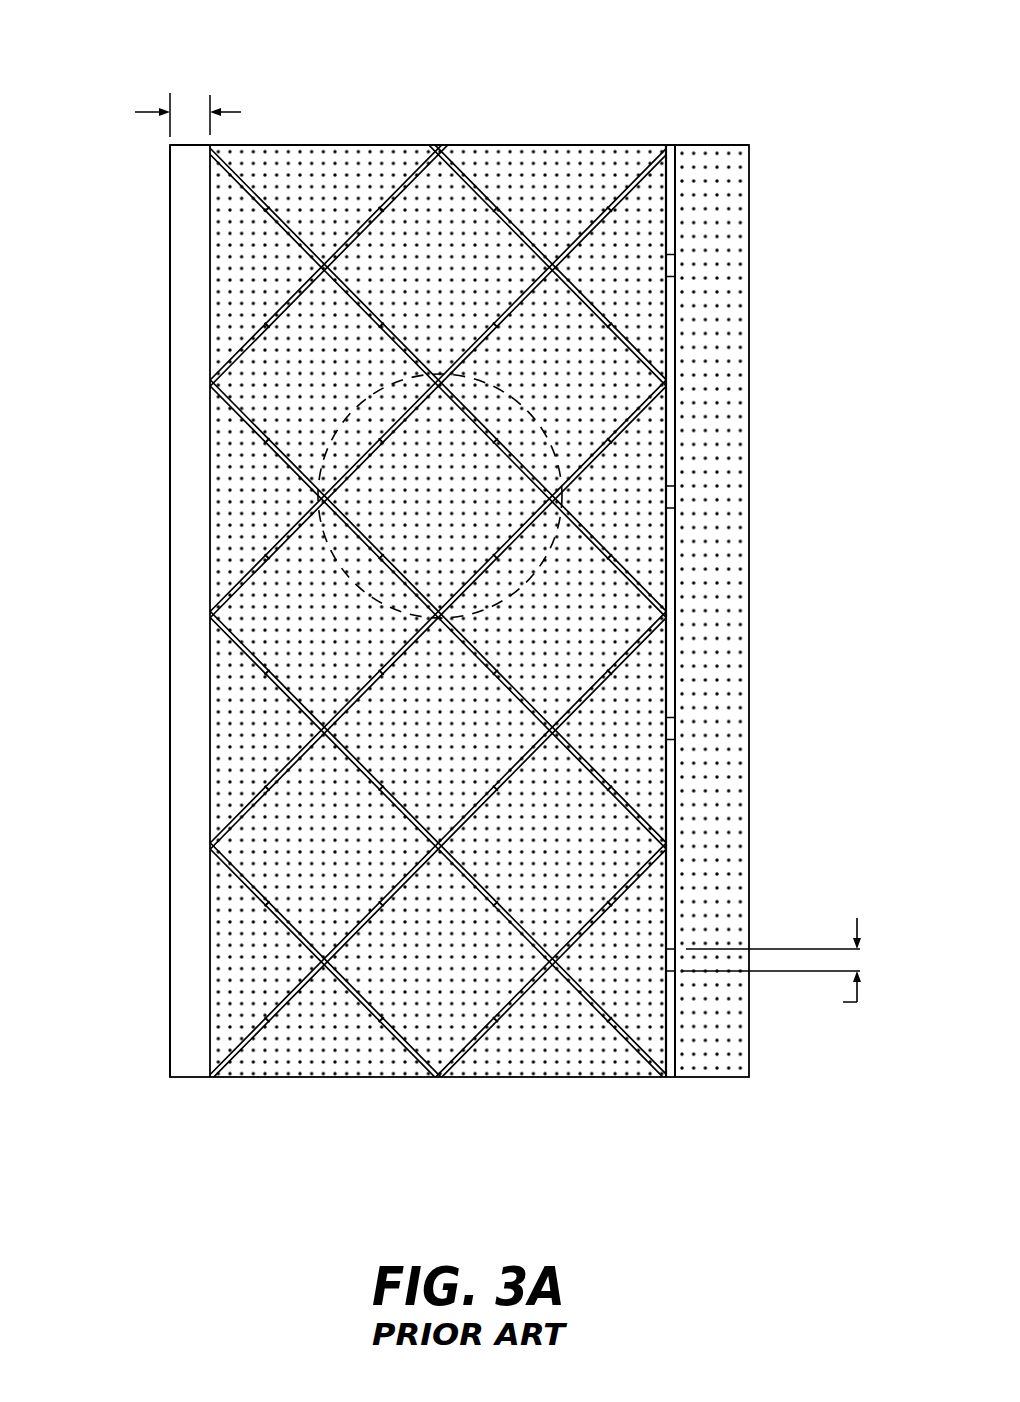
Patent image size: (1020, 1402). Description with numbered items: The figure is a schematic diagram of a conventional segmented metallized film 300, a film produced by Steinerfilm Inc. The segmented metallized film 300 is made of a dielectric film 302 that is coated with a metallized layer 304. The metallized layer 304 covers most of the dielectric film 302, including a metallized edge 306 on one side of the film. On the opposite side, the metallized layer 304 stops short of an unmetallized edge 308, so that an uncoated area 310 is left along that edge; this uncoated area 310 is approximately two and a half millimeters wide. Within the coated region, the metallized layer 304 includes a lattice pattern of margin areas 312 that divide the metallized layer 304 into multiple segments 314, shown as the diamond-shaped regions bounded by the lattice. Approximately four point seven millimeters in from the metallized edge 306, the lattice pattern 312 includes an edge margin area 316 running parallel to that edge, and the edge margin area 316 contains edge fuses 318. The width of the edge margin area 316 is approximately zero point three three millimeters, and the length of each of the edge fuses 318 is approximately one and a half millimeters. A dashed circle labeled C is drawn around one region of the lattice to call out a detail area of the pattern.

The segmented metallized film 300 is at (510, 64).
The dielectric film 302 is at (187, 1055).
The metallized layer 304 is at (557, 1060).
The metallized edge 306 is at (749, 470).
The unmetallized edge 308 is at (170, 556).
The uncoated area 310 is at (213, 115).
The margin areas 312 is at (458, 146).
The segments 314 is at (470, 268).
The edge margin area 316 is at (678, 1053).
The edge fuses 318 is at (772, 970).
The detail circle C is at (548, 424).